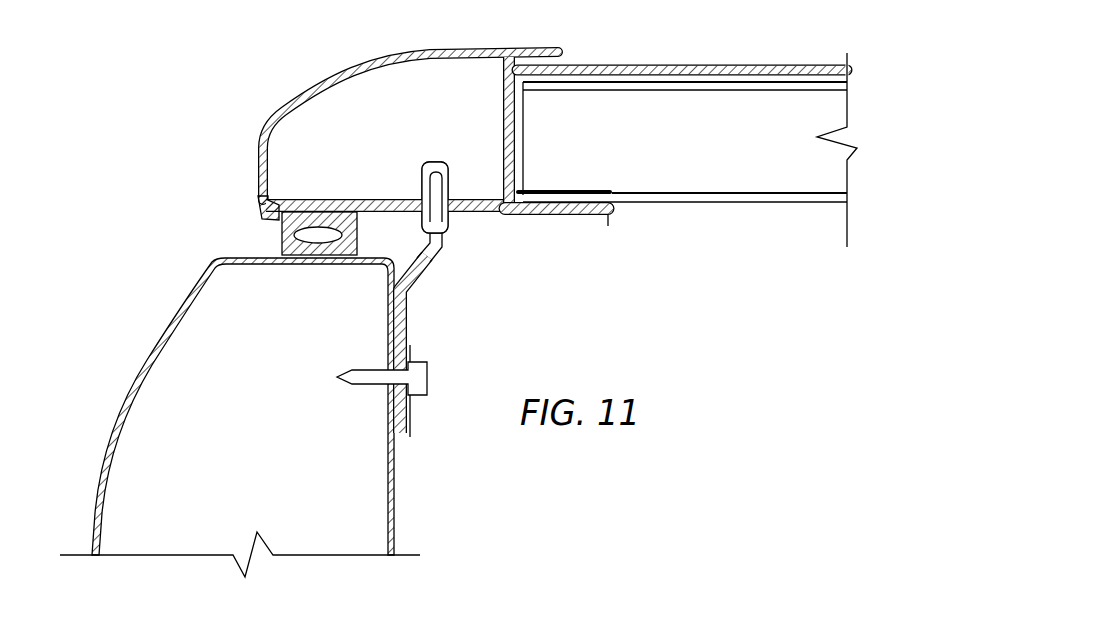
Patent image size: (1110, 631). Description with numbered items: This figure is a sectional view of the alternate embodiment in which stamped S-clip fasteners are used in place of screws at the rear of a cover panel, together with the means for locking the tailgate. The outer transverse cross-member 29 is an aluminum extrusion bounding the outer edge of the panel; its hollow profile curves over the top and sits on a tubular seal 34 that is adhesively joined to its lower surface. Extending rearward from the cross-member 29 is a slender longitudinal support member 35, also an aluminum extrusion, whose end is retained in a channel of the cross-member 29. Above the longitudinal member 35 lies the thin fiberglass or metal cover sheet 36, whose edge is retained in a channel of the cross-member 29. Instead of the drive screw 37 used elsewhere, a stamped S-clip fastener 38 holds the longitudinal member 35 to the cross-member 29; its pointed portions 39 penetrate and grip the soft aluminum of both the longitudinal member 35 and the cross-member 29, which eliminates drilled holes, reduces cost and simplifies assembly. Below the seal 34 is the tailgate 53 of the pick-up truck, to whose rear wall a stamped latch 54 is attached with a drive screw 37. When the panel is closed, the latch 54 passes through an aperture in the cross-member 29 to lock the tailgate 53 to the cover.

The outer transverse cross-member 29 is at (316, 99).
The tubular seal 34 is at (288, 250).
The longitudinal support member 35 is at (727, 203).
The cover sheet 36 is at (697, 65).
The drive screw 37 is at (423, 395).
The stamped S-clip fastener 38 is at (568, 192).
The pointed portion 39 is at (612, 196).
The tailgate 53 is at (141, 355).
The stamped latch 54 is at (408, 345).